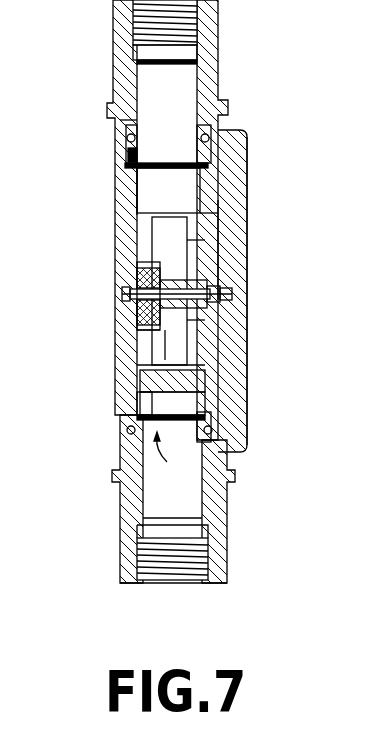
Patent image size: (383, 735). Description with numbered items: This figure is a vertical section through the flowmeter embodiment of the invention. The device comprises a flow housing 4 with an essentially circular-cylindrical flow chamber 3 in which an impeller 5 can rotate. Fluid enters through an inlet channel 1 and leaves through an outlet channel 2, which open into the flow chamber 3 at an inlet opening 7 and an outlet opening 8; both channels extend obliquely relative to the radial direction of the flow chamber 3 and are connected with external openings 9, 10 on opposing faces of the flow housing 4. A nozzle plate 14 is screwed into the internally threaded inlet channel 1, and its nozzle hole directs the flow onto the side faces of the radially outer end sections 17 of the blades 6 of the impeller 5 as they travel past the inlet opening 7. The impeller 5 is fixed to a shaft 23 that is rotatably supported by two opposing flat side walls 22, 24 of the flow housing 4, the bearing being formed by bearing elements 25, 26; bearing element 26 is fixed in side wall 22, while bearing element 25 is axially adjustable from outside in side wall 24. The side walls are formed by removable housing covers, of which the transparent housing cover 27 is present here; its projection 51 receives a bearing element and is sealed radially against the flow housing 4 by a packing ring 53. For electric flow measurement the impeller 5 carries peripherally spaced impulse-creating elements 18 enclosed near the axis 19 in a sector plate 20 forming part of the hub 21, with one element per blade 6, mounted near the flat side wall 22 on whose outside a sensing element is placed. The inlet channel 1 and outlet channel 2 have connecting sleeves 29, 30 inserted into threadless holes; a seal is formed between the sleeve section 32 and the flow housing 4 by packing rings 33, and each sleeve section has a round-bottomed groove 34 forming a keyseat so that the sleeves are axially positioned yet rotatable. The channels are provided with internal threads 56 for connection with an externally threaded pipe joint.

The inlet channel 1 is at (138, 408).
The outlet channel 2 is at (118, 152).
The flow chamber 3 is at (213, 315).
The flow housing 4 is at (245, 200).
The impeller 5 is at (167, 337).
The blades 6 is at (207, 335).
The inlet opening 7 is at (148, 378).
The outlet opening 8 is at (112, 208).
The external opening 9 is at (171, 454).
The external opening 10 is at (182, 135).
The nozzle plate 14 is at (118, 396).
The radially outer end sections 17 is at (213, 358).
The impulse-creating elements 18 is at (122, 277).
The axis 19 is at (122, 295).
The sector plate 20 is at (120, 235).
The hub 21 is at (218, 262).
The flat side wall 22 is at (115, 183).
The shaft 23 is at (212, 303).
The flat side wall 24 is at (237, 175).
The bearing element 25 is at (213, 282).
The bearing element 26 is at (125, 322).
The housing cover 27 is at (301, 291).
The connecting sleeve 29 is at (220, 520).
The connecting sleeve 30 is at (213, 33).
The sleeve section 32 is at (110, 115).
The packing rings 33 is at (240, 150).
The groove 34 is at (237, 125).
The projection 51 is at (172, 217).
The packing ring 53 is at (205, 218).
The internal threads 56 is at (147, 580).